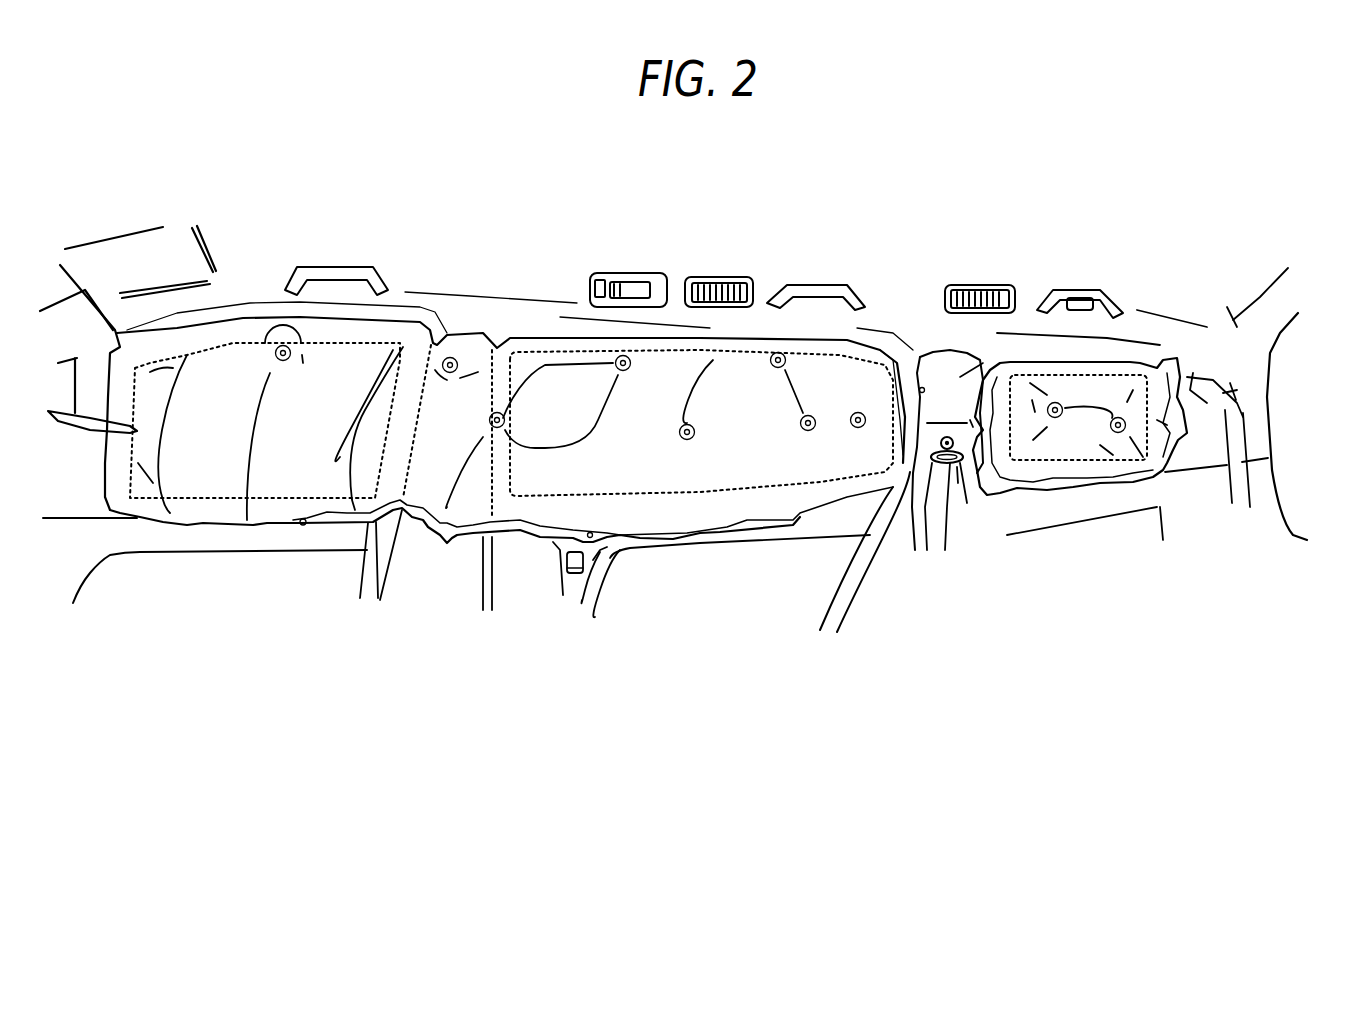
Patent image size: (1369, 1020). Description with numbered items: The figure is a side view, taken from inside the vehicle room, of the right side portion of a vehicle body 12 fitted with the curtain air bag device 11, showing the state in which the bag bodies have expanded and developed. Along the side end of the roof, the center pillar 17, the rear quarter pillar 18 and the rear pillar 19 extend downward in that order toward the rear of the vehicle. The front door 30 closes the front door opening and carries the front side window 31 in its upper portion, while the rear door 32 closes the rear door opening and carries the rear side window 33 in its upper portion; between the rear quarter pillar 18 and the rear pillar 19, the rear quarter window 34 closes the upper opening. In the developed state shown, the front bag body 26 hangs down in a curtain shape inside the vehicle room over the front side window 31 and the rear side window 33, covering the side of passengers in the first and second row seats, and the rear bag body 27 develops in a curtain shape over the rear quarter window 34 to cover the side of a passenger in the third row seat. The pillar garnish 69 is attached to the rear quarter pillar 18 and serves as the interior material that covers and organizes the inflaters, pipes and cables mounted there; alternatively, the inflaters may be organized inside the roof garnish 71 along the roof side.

The curtain air bag device 11 is at (1193, 365).
The vehicle body 12 is at (1282, 506).
The center pillar 17 is at (417, 580).
The rear quarter pillar 18 is at (950, 357).
The rear pillar 19 is at (1253, 430).
The bag body 26 is at (470, 513).
The rear bag body 27 is at (1077, 453).
The front door 30 is at (235, 593).
The front side window 31 is at (233, 343).
The rear door 32 is at (705, 600).
The rear side window 33 is at (665, 378).
The rear quarter window 34 is at (1107, 387).
The pillar garnish 69 is at (960, 377).
The roof garnish 71 is at (1177, 340).